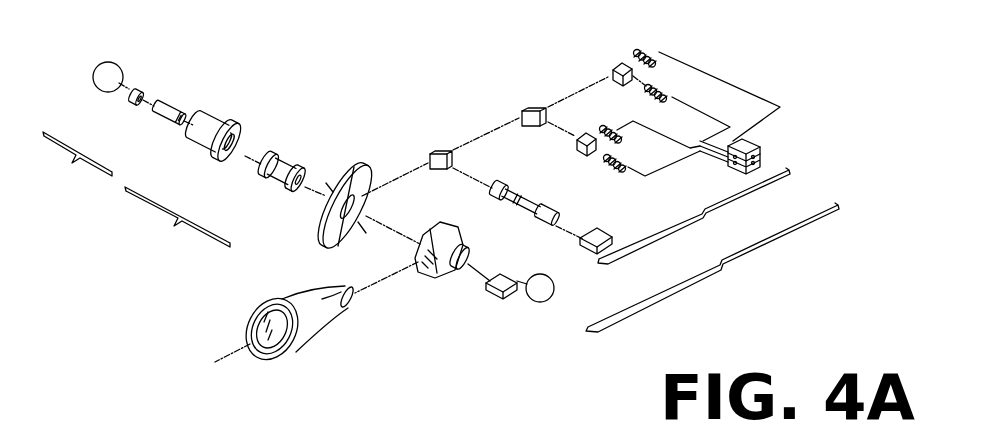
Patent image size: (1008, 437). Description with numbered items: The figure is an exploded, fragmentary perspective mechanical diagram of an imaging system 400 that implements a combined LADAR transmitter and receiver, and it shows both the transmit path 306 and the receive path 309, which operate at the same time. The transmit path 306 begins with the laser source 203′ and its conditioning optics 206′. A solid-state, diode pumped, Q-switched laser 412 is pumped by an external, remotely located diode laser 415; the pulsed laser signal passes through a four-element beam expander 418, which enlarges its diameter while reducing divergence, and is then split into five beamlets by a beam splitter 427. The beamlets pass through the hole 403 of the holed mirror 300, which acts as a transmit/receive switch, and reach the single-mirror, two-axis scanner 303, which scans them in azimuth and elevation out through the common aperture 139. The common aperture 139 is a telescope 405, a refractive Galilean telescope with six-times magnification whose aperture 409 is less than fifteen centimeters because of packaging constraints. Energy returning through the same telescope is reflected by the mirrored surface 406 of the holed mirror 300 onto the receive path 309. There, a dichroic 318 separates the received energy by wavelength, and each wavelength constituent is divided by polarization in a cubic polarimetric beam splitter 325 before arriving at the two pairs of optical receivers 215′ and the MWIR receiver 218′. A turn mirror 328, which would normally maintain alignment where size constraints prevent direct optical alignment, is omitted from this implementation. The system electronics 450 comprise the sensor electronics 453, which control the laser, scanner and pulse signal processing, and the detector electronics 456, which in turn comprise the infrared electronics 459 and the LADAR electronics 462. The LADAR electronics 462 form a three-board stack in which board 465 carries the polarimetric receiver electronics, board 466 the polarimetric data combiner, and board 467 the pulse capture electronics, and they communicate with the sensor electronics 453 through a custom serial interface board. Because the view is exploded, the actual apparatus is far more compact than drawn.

The imaging system 400 is at (268, 24).
The receive path 309 is at (462, 50).
The transmit path 306 is at (233, 100).
The common aperture 139 is at (242, 302).
The laser source 203′ is at (76, 167).
The conditioning optics 206′ is at (177, 222).
The diode laser 415 is at (128, 101).
The laser 412 is at (165, 115).
The beam expander 418 is at (197, 147).
The beam splitter 427 is at (270, 178).
The mirrored surface 406 is at (352, 166).
The hole 403 is at (337, 224).
The holed mirror 300 is at (345, 243).
The two-axis scanner 303 is at (447, 273).
The sensor electronics 453 is at (503, 300).
The telescope 405 is at (291, 358).
The aperture of the telescope 409 is at (272, 357).
The dichroic 318 is at (433, 151).
The turn mirror 328 is at (522, 106).
The polarimetric beam splitter 325 is at (623, 87).
The optical receivers 215′ is at (648, 50).
The board for pulse capture electronics 467 is at (753, 137).
The board for polarimetric data combiner 466 is at (760, 150).
The board for polarimetric receiver electronics 465 is at (760, 160).
The LADAR electronics 462 is at (737, 167).
The infrared electronics 459 is at (605, 230).
The MWIR receiver 218′ is at (543, 223).
The detector electronics 456 is at (694, 216).
The system electronics 450 is at (712, 267).